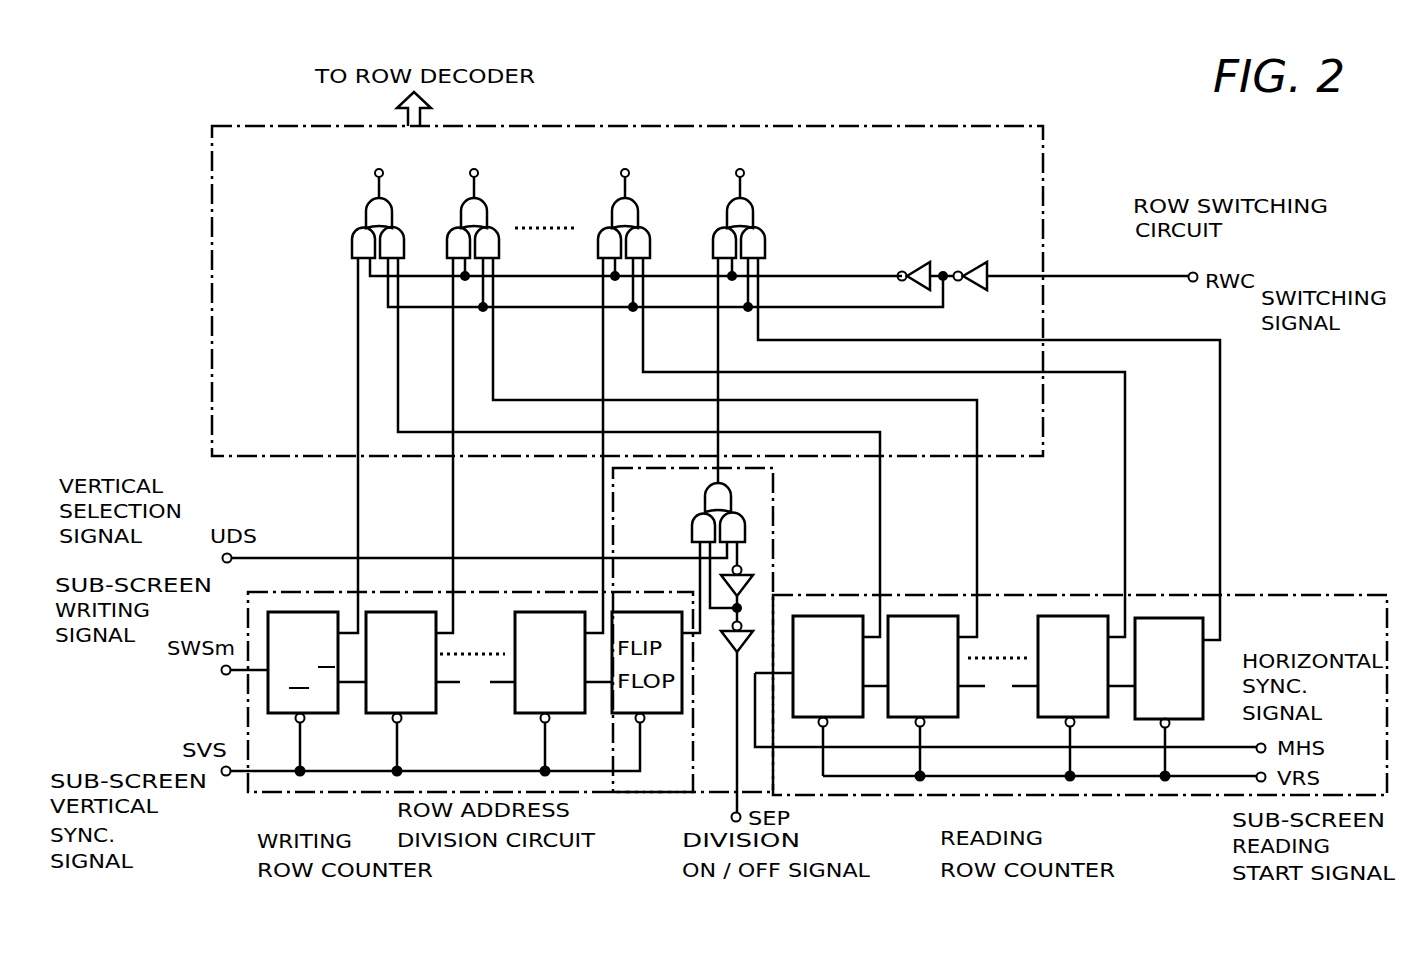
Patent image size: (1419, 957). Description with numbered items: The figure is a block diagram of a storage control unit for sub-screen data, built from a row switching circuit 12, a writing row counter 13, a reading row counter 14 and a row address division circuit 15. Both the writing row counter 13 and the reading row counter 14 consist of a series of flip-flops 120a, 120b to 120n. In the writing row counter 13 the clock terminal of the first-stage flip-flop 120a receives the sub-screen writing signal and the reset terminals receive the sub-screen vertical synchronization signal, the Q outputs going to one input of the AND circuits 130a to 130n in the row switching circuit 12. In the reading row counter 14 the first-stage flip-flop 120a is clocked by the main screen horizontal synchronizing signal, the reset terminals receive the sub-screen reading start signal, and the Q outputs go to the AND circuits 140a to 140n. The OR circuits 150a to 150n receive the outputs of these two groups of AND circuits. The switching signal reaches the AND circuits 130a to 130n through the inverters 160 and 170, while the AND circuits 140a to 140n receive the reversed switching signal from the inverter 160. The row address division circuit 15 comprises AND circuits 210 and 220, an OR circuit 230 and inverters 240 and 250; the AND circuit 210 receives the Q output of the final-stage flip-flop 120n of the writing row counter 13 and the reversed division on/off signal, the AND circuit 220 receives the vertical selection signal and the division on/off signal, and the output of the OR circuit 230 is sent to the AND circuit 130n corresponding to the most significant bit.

The row switching circuit 12 is at (1043, 250).
The writing row counter 13 is at (268, 792).
The reading row counter 14 is at (845, 795).
The row address division circuit 15 is at (708, 793).
The flip-flop 120a is at (322, 714).
The flip-flop 120b is at (418, 714).
The flip-flop 120n is at (623, 715).
The AND circuit 130a is at (352, 248).
The AND circuit 130n is at (713, 243).
The AND circuit 140a is at (405, 238).
The AND circuit 140n is at (768, 235).
The OR circuit 150a is at (365, 213).
The OR circuit 150n is at (730, 210).
The inverter 160 is at (977, 267).
The inverter 170 is at (915, 265).
The AND circuit 210 is at (692, 530).
The AND circuit 220 is at (747, 523).
The OR circuit 230 is at (733, 493).
The inverter 240 is at (745, 640).
The inverter 250 is at (750, 582).